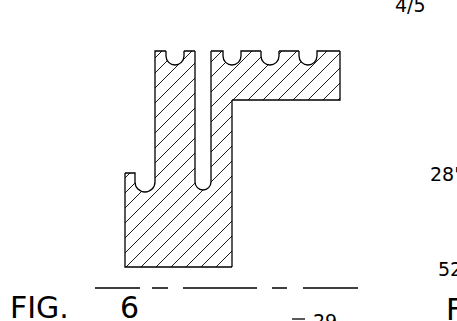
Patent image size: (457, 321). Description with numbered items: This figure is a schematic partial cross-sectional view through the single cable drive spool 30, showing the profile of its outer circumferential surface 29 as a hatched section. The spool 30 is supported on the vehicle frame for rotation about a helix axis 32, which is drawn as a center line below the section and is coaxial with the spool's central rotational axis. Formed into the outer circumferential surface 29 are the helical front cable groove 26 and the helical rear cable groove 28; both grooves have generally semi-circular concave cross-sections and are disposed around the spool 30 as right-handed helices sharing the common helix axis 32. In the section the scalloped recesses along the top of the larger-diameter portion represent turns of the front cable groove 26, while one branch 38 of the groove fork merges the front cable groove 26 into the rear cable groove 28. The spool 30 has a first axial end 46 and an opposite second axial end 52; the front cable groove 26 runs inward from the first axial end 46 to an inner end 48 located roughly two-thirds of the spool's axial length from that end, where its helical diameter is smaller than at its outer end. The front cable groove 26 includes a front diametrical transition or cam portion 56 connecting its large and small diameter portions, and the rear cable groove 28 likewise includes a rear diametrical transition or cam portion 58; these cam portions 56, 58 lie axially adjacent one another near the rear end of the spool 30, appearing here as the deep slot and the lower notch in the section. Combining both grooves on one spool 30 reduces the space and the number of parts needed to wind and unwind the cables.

The helical front cable groove 26 is at (316, 63).
The helical rear cable groove 28 is at (90, 161).
The outer circumferential surface 29 is at (278, 62).
The spool 30 is at (236, 222).
The helix axis 32 is at (320, 288).
The branch of groove fork 38 is at (175, 64).
The first axial end 46 is at (340, 85).
The inner end of front cable groove 48 is at (281, 120).
The second axial end 52 is at (125, 223).
The front diametrical transition or cam portion 56 is at (200, 188).
The rear diametrical transition or cam portion 58 is at (148, 189).